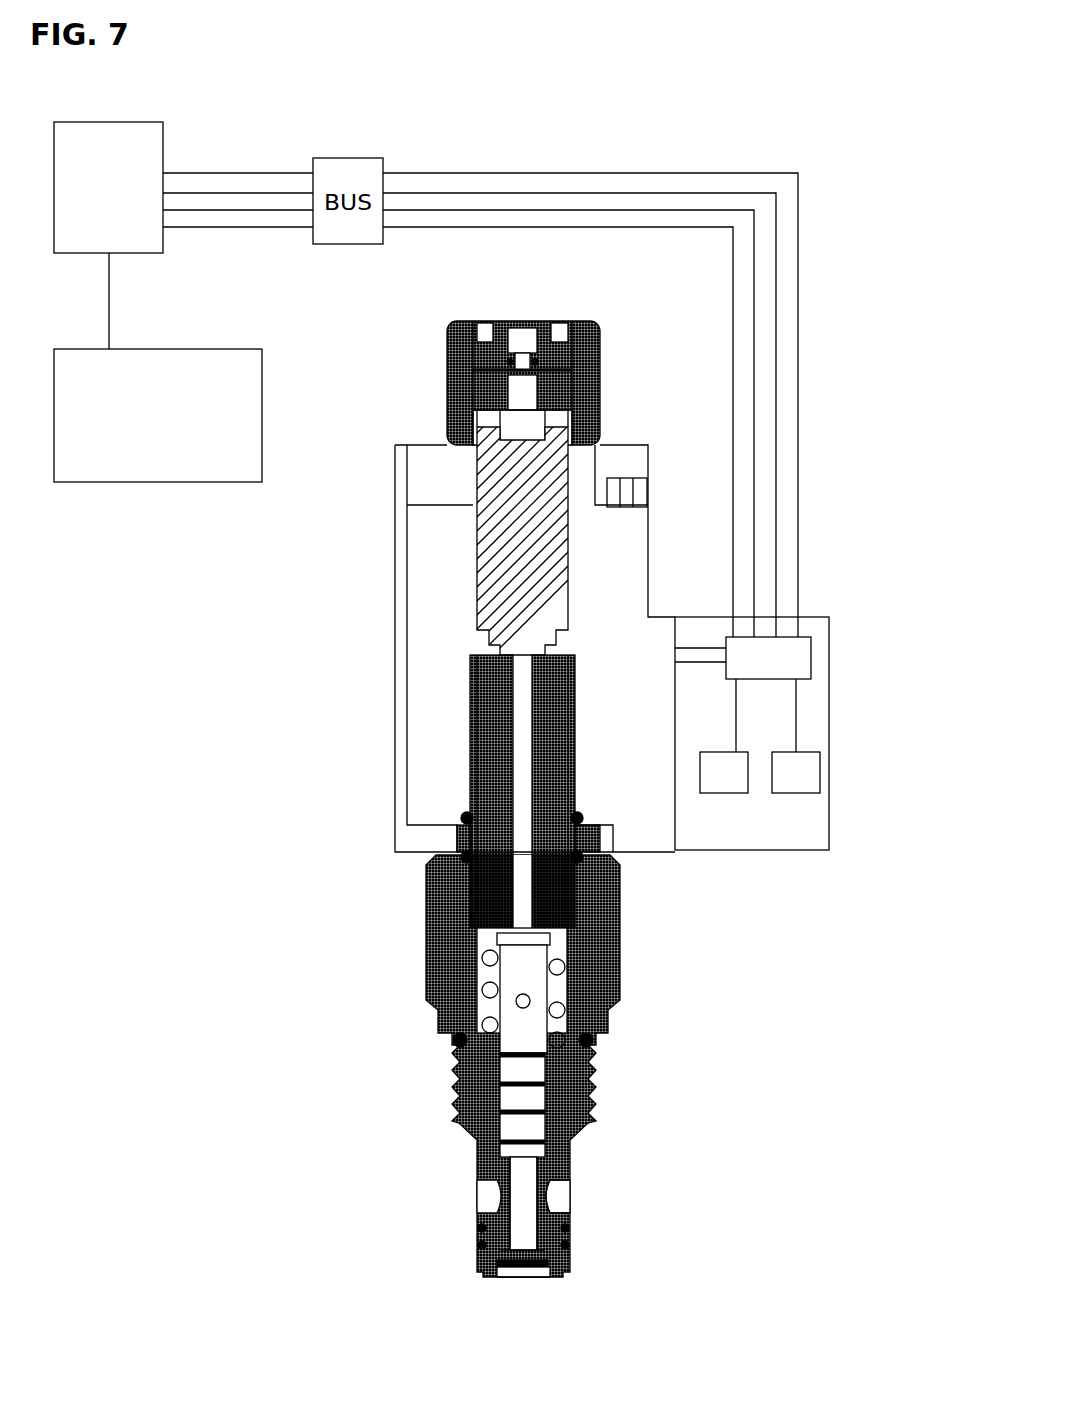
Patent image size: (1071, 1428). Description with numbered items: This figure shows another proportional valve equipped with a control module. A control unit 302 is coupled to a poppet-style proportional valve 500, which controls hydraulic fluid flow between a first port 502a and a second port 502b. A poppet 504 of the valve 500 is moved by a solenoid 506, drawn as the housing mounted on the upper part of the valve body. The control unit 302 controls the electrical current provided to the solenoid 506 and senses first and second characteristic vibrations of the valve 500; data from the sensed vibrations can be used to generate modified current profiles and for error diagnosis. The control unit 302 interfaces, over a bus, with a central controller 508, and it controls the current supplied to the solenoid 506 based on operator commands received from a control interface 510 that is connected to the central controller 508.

The central controller 508 is at (163, 141).
The control interface 510 is at (215, 349).
The control unit 302 is at (831, 735).
The solenoid 506 is at (395, 637).
The poppet-style proportional valve 500 is at (424, 950).
The second port 502b is at (558, 1190).
The poppet 504 is at (510, 1232).
The first port 502a is at (537, 1274).